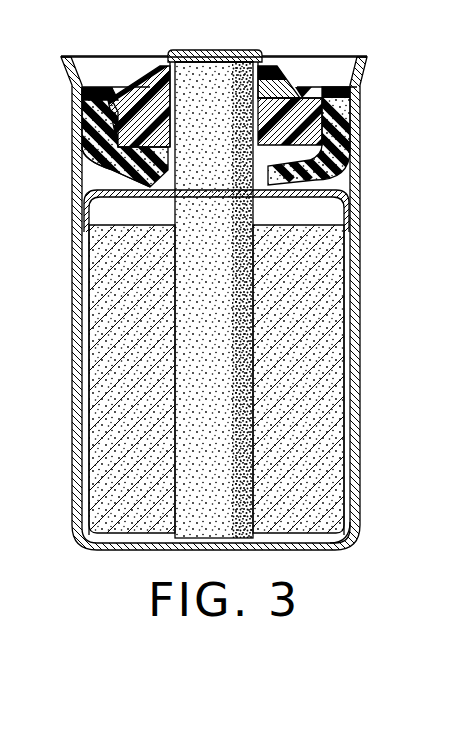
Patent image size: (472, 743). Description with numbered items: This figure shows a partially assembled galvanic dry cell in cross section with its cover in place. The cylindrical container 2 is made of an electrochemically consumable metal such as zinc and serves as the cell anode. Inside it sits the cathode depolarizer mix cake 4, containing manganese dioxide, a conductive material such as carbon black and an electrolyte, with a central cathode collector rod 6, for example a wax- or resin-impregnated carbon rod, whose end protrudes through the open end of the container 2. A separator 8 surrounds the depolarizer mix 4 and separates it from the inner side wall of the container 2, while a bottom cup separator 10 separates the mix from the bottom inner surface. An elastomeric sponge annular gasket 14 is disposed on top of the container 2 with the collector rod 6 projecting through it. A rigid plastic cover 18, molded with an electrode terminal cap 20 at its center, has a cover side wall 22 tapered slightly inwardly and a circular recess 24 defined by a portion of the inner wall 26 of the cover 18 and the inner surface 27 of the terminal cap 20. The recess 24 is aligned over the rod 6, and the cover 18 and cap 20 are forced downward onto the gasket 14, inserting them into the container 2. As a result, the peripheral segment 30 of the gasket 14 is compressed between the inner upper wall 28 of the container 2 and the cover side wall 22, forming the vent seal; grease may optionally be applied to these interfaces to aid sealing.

The cylindrical container 2 is at (353, 162).
The cathode depolarizer mix cake 4 is at (333, 275).
The cathode collector rod 6 is at (232, 77).
The separator 8 is at (337, 197).
The bottom cup separator 10 is at (340, 532).
The elastomeric sponge annular gasket 14 is at (343, 103).
The cover 18 is at (278, 80).
The electrode terminal cap 20 is at (192, 62).
The cover side wall 22 is at (87, 148).
The circular recess 24 is at (160, 92).
The inner wall of cover 26 is at (302, 97).
The inner surface of terminal cap 27 is at (207, 63).
The inner upper wall of container 28 is at (85, 122).
The peripheral segment of gasket 30 is at (96, 93).